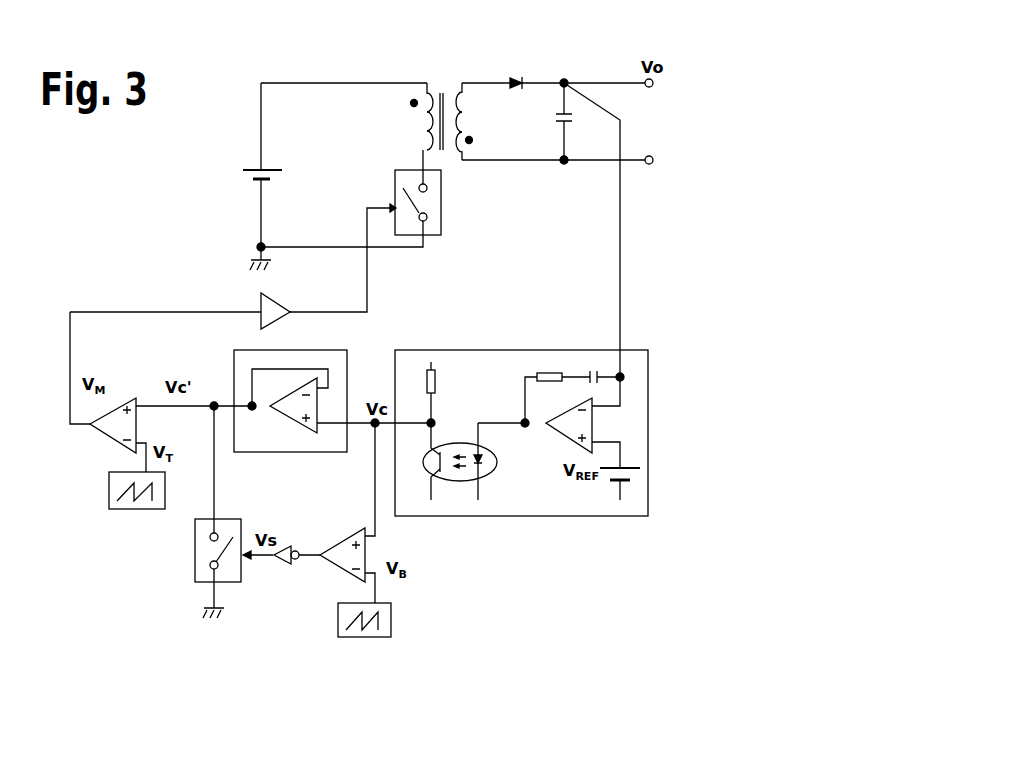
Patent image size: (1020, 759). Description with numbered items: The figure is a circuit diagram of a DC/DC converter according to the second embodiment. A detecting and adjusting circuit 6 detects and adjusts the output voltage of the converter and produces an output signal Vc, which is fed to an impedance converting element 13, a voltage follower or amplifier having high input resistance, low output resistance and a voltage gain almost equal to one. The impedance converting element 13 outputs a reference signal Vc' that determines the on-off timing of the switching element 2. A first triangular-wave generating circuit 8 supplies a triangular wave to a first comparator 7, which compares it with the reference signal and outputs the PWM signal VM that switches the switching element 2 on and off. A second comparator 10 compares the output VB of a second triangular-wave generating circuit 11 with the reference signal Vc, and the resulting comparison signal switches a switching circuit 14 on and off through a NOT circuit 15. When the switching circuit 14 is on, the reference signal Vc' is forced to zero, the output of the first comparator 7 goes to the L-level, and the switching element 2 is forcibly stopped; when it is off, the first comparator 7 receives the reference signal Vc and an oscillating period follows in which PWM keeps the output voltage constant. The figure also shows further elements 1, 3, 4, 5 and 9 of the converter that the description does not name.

The DC power source (battery) 1 is at (233, 178).
The switching element 2 is at (452, 228).
The transformer 3 is at (433, 73).
The rectifying diode 4 is at (516, 73).
The smoothing capacitor 5 is at (583, 120).
The detecting and adjusting circuit 6 is at (524, 525).
The first comparator 7 is at (106, 448).
The first triangular-wave generating circuit 8 is at (127, 520).
The driving buffer 9 is at (251, 303).
The second comparator 10 is at (338, 535).
The second triangular-wave generating circuit 11 is at (366, 650).
The impedance converting element 13 is at (290, 462).
The switching circuit 14 is at (234, 592).
The NOT circuit 15 is at (280, 575).